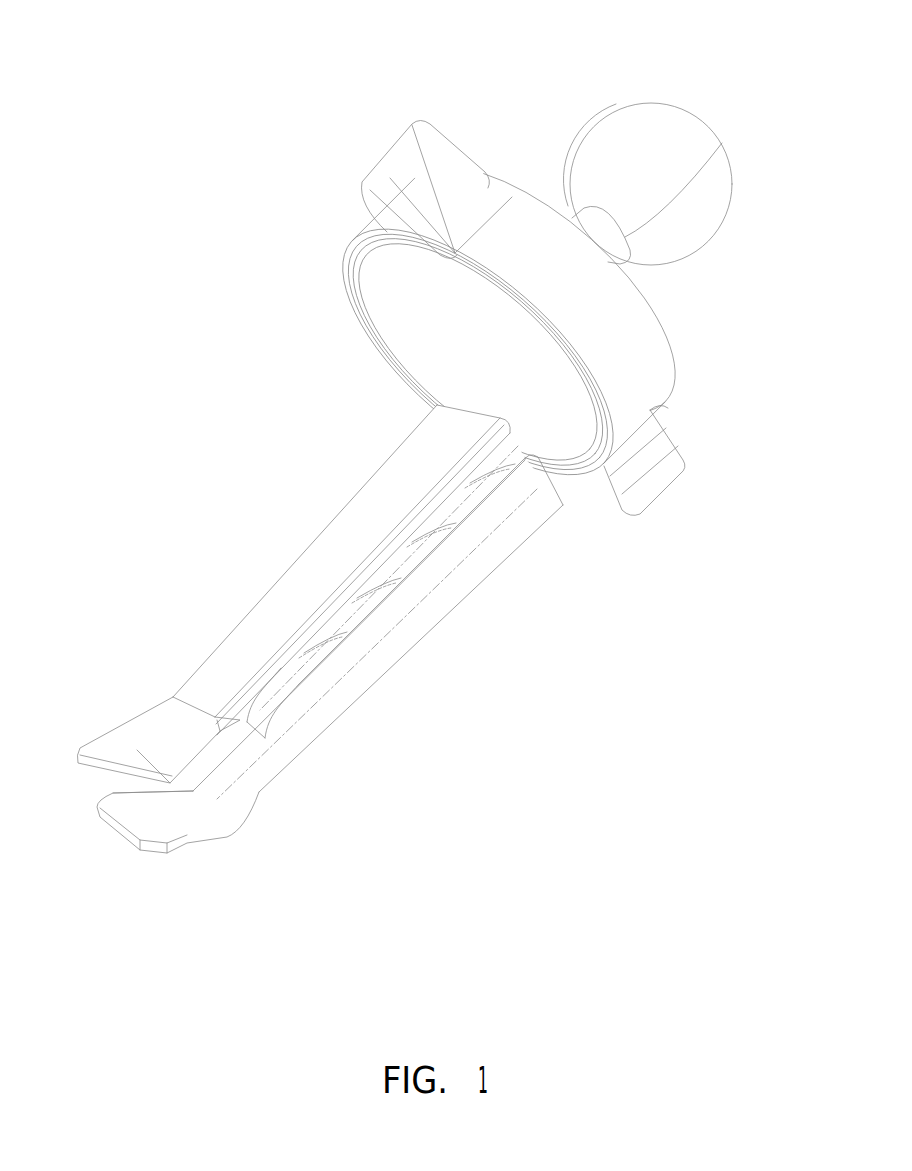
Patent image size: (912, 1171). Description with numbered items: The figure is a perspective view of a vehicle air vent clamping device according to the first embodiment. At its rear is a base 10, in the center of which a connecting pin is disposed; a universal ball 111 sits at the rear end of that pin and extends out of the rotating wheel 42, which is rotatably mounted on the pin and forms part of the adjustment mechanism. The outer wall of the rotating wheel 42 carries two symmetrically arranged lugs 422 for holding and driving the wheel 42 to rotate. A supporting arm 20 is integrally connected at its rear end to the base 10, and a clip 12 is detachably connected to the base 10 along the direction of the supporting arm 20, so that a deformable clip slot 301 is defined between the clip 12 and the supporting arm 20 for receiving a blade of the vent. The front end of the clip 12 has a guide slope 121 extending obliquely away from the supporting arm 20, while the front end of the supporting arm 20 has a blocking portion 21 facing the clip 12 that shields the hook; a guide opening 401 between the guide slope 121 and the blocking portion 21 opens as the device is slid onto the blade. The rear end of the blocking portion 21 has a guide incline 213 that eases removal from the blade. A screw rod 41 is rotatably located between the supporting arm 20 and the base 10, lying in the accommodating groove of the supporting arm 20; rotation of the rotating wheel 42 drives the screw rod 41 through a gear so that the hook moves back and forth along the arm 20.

The base 10 is at (392, 258).
The rotating wheel 42 is at (625, 320).
The universal ball 111 is at (705, 222).
The lugs 422 is at (432, 162).
The clip 12 is at (355, 535).
The guide slope 121 is at (160, 765).
The screw rod 41 is at (477, 514).
The clip slot 301 is at (390, 570).
The supporting arm 20 is at (383, 640).
The guide incline 213 is at (283, 700).
The blocking portion 21 is at (150, 792).
The guide opening 401 is at (105, 788).